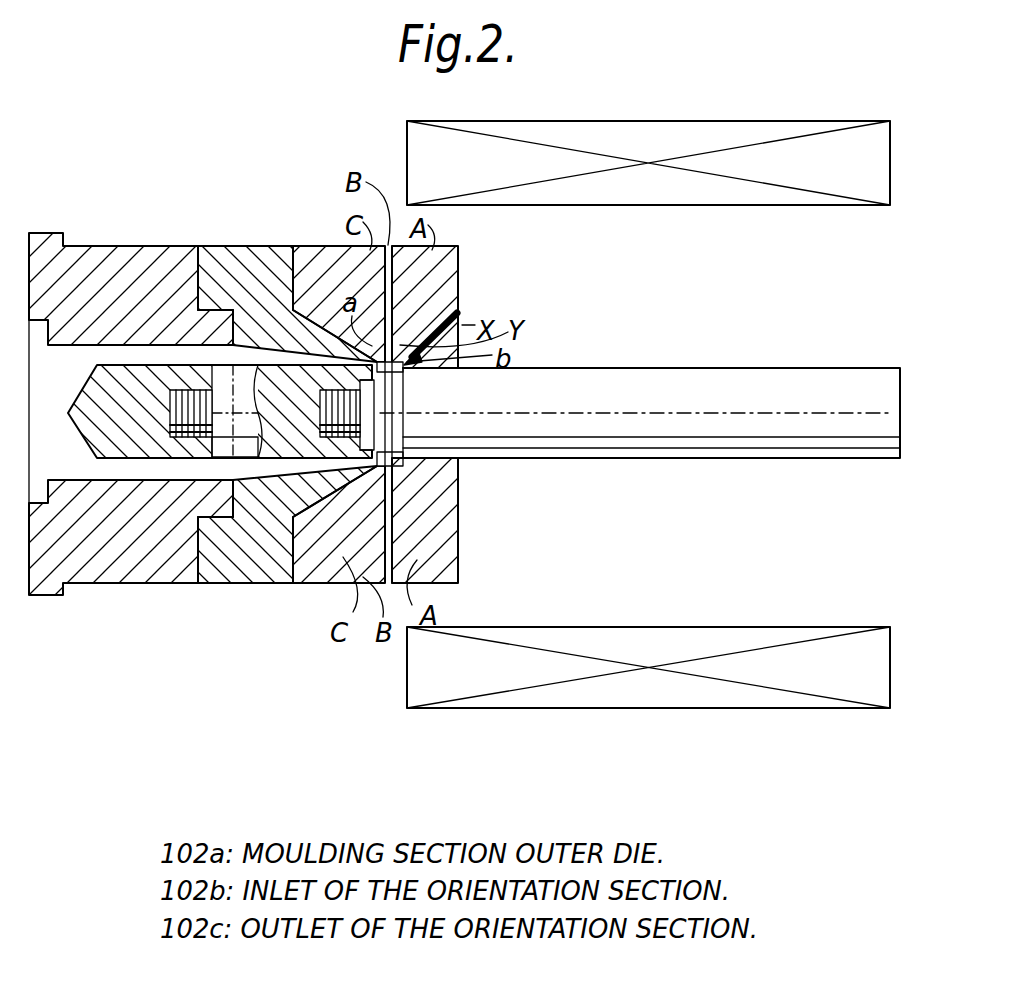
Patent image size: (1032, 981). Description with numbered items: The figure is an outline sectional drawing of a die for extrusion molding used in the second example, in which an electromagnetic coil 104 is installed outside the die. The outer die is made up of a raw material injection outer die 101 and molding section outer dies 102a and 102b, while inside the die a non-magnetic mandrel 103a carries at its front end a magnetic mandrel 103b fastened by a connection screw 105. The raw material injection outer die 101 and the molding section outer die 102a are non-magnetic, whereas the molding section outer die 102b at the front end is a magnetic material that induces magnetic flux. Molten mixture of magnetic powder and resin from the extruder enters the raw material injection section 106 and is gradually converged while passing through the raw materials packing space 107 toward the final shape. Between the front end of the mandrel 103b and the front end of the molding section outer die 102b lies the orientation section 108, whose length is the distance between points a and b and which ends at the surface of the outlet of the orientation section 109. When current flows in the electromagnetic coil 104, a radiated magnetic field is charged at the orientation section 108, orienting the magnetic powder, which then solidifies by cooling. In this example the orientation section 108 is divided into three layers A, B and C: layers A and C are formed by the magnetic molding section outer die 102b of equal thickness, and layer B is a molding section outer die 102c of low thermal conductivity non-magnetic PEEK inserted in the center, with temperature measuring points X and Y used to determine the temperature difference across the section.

The raw material injection outer die 101 is at (130, 250).
The molding section outer die 102a is at (258, 250).
The molding section outer die 102b is at (318, 250).
The molding section outer die 102c is at (452, 250).
The mandrel 103a is at (130, 440).
The mandrel 103b is at (725, 366).
The electromagnetic coil 104 is at (738, 196).
The connection screw 105 is at (187, 453).
The raw material injection section 106 is at (62, 455).
The raw materials packing space 107 is at (250, 470).
The orientation section 108 is at (400, 465).
The surface of the outlet of the orientation section 109 is at (460, 298).